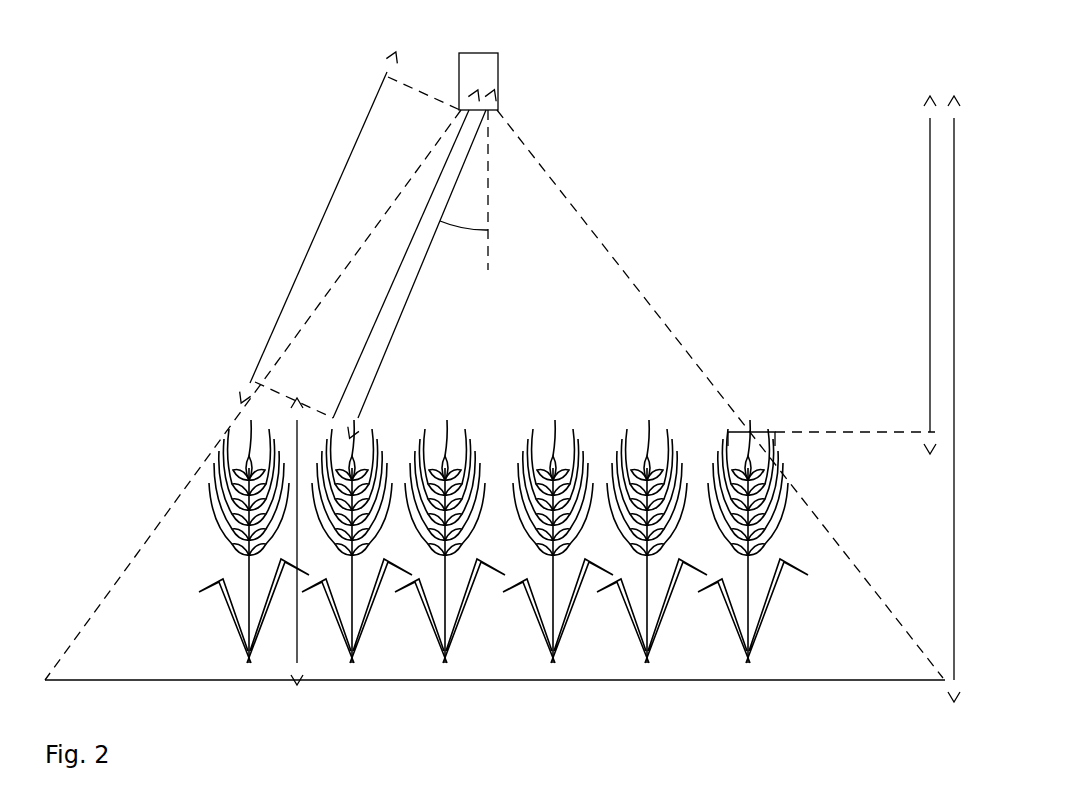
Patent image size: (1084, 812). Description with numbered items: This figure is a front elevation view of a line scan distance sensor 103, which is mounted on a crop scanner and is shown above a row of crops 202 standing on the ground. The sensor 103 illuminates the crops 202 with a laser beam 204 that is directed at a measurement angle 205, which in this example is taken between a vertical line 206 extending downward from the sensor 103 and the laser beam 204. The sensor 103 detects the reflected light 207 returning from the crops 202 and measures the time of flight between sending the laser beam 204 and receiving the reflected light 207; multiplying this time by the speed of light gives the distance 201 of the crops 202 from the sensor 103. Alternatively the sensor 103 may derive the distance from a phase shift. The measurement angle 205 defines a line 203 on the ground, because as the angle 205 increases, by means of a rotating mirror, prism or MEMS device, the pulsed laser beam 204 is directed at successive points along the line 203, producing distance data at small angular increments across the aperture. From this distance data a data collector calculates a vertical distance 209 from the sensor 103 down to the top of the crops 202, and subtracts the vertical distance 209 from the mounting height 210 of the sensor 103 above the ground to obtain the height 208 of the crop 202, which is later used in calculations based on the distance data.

The line scan distance sensor 103 is at (468, 53).
The distance 201 is at (345, 162).
The crops 202 is at (566, 400).
The line 203 is at (267, 681).
The laser beam 204 is at (382, 362).
The measurement angle 205 is at (465, 236).
The vertical line 206 is at (488, 245).
The reflected light 207 is at (358, 362).
The height of the crop 208 is at (302, 645).
The vertical distance 209 is at (930, 272).
The mounting height 210 is at (953, 492).